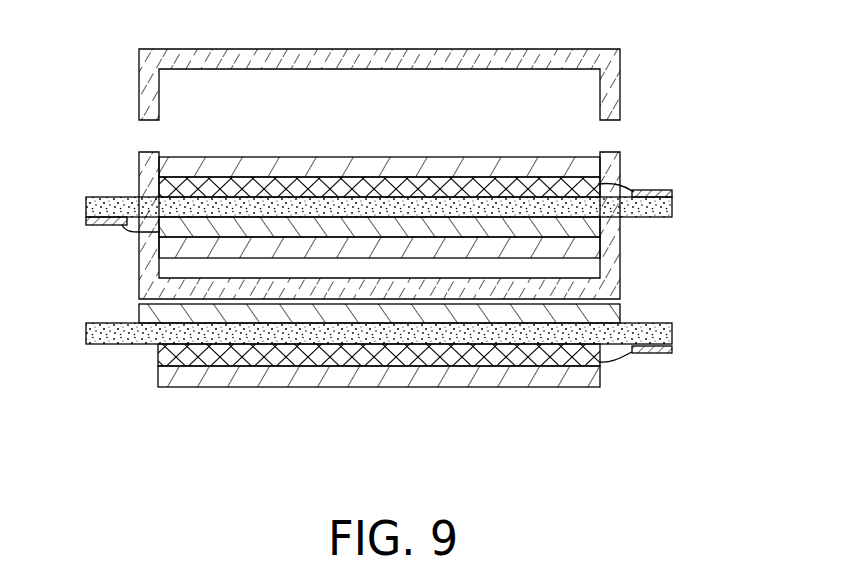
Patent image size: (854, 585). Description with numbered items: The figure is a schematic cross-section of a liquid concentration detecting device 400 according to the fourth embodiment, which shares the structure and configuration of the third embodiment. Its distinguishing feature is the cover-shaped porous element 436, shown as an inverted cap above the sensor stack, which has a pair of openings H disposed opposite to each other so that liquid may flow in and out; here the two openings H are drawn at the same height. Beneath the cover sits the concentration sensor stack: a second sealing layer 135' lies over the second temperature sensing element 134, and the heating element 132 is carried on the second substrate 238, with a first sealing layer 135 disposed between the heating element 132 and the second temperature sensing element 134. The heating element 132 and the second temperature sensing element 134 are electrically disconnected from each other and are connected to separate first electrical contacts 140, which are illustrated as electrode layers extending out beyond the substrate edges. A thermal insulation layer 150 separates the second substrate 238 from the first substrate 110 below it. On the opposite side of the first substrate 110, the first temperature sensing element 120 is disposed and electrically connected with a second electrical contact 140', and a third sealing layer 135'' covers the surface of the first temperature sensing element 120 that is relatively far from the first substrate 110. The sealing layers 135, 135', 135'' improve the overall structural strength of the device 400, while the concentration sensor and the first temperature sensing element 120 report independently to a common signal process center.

The cover-shaped porous element 436 is at (613, 90).
The openings H is at (140, 140).
The liquid concentration detecting device 400 is at (598, 434).
The second sealing layer 135' is at (324, 159).
The second temperature sensing element 134 is at (163, 188).
The first electrical contacts 140 is at (378, 189).
The second substrate 238 is at (673, 210).
The heating element 132 is at (593, 232).
The first sealing layer 135 is at (452, 252).
The thermal insulation layer 150 is at (630, 312).
The first substrate 110 is at (672, 333).
The second electrical contact 140' is at (678, 344).
The first temperature sensing element 120 is at (592, 365).
The third sealing layer 135'' is at (428, 395).